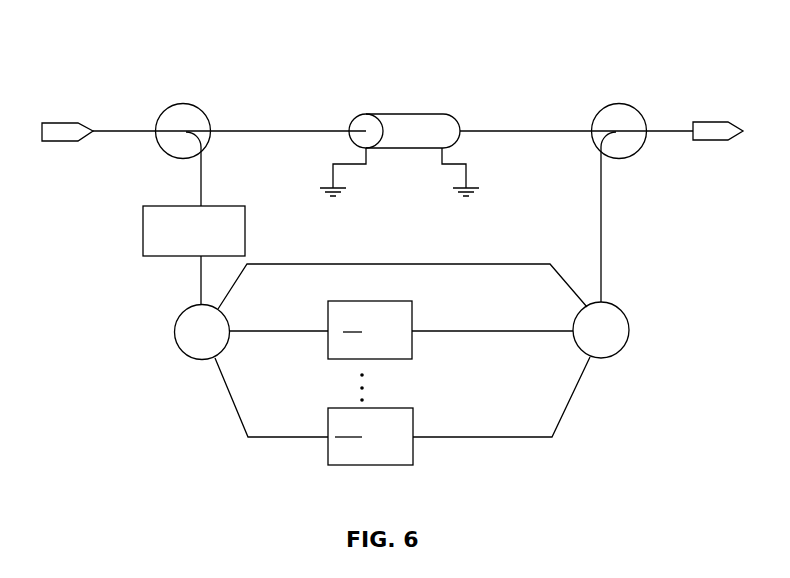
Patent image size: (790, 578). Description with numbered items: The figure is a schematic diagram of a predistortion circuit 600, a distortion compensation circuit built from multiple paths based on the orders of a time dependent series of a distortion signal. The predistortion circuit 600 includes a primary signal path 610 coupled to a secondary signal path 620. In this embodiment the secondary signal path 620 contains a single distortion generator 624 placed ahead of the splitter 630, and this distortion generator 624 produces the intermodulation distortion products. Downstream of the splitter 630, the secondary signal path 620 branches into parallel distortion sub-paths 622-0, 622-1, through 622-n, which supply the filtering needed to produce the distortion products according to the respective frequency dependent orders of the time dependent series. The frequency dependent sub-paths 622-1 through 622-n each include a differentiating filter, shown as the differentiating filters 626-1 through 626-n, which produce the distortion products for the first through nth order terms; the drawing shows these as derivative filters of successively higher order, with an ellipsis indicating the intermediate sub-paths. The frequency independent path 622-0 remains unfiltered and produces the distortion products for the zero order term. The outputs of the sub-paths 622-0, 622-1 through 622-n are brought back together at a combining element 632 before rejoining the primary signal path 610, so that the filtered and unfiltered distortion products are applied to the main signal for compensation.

The predistortion circuit 600 is at (238, 45).
The primary signal path 610 is at (434, 80).
The secondary signal path 620 is at (372, 384).
The frequency independent path 622-0 is at (224, 276).
The frequency dependent sub-path 622-1 is at (242, 364).
The frequency dependent sub-path 622-n is at (219, 439).
The distortion generator 624 is at (143, 222).
The differentiating filter 626-1 is at (402, 359).
The differentiating filter 626-n is at (400, 465).
The splitter 630 is at (175, 335).
The combiner 632 is at (629, 331).